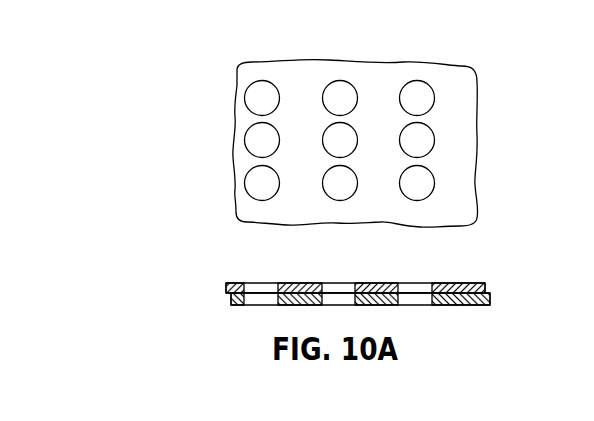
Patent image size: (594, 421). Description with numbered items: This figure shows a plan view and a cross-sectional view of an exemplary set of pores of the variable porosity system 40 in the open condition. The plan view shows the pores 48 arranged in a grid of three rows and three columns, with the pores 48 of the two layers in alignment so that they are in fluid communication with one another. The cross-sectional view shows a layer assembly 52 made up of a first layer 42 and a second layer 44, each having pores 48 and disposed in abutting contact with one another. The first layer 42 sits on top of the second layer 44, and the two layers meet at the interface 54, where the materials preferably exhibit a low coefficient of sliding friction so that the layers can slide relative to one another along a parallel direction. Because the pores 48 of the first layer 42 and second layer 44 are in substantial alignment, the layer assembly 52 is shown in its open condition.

The variable porosity system 40 is at (218, 88).
The pores 48 is at (427, 178).
The layer assembly 52 is at (202, 275).
The first layer 42 is at (486, 288).
The second layer 44 is at (490, 300).
The interface 54 is at (490, 294).